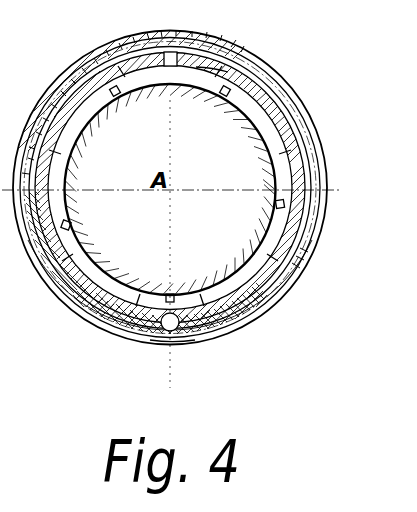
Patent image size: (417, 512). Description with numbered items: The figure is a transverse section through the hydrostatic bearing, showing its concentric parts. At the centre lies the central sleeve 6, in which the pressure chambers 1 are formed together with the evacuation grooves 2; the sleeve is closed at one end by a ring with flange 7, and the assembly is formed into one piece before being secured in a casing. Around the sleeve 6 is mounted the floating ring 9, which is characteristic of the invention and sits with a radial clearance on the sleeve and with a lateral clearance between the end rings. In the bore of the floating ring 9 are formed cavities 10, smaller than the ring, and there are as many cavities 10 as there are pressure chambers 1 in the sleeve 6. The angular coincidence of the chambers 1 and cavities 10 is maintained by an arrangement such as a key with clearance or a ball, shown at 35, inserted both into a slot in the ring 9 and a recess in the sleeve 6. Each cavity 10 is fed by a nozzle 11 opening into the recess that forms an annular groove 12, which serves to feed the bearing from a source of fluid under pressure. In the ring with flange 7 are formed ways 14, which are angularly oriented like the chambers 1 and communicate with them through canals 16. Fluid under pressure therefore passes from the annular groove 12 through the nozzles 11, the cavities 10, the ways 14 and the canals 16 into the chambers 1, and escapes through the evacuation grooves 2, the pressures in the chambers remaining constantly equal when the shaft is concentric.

The pressure chamber 1 is at (158, 93).
The evacuation groove 2 is at (114, 100).
The central sleeve 6 is at (216, 68).
The ring with flange 7 is at (128, 42).
The floating ring 9 is at (125, 335).
The cavity 10 is at (72, 300).
The nozzle 11 is at (90, 318).
The annular groove 12 is at (178, 345).
The way 14 is at (197, 52).
The canal 16 is at (70, 140).
The key or ball arrangement 35 is at (162, 330).